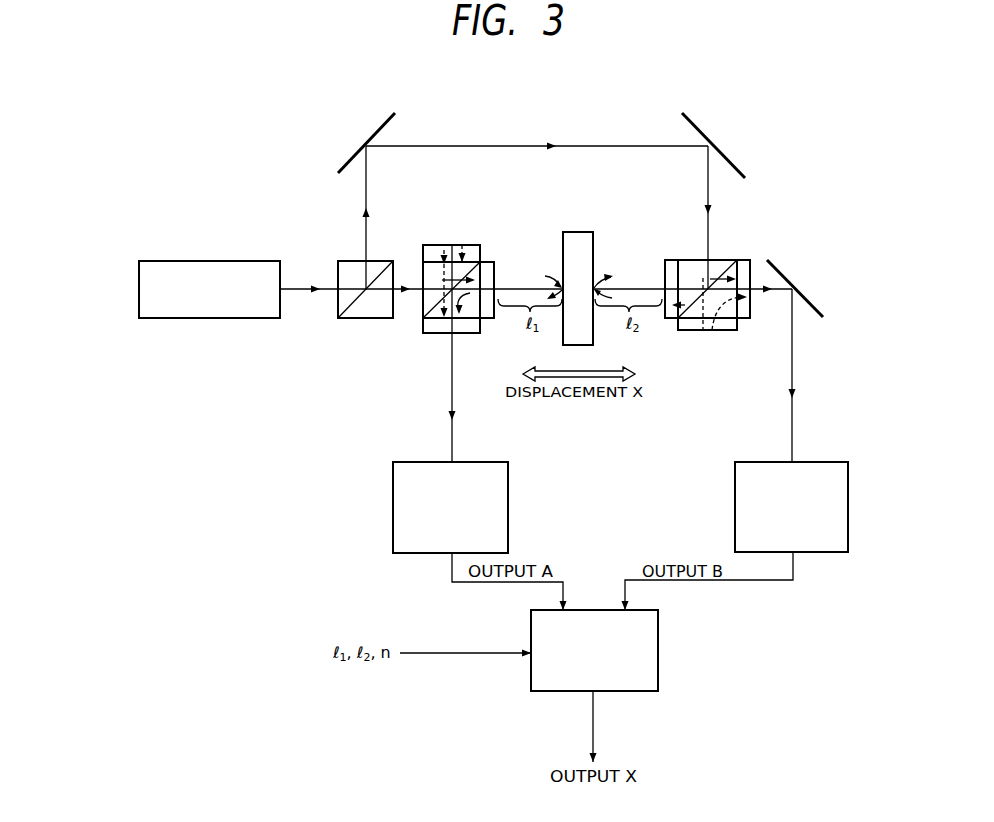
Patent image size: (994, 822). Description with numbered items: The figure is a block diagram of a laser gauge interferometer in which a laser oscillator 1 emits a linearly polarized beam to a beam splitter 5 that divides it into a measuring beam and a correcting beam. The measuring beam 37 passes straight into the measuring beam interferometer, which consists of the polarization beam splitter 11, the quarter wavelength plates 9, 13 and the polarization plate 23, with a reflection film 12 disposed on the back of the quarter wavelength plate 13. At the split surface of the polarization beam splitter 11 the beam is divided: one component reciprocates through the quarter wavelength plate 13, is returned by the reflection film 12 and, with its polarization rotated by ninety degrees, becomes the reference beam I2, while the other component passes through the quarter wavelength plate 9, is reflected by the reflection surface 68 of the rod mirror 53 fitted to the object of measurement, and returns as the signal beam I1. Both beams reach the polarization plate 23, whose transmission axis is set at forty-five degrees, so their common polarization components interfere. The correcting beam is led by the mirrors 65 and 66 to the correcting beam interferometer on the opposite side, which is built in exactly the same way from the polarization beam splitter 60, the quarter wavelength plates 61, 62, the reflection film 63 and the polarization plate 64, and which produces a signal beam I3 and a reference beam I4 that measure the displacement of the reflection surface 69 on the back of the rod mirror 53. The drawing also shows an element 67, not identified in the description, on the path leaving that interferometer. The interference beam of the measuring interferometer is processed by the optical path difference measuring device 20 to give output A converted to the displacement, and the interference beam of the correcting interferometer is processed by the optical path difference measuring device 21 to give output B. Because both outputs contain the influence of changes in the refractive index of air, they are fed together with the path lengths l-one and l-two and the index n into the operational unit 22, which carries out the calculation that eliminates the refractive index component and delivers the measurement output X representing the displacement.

The laser oscillator 1 is at (230, 261).
The beam splitter 5 is at (347, 261).
The quarter wavelength plate 9 is at (487, 262).
The polarization beam splitter 11 is at (468, 313).
The reflection film 12 is at (440, 245).
The quarter wavelength plate 13 is at (430, 252).
The polarization plate 23 is at (435, 330).
The optical path difference measuring device 20 is at (393, 481).
The optical path difference measuring device 21 is at (735, 481).
The operational unit 22 is at (659, 626).
The measuring beam 37 is at (488, 146).
The rod mirror 53 is at (573, 238).
The polarization beam splitter 60 is at (688, 265).
The quarter wavelength plate 61 is at (668, 272).
The quarter wavelength plate 62 is at (725, 331).
The reflection film 63 is at (696, 331).
The polarization plate 64 is at (741, 264).
The mirror 65 is at (357, 153).
The mirror 66 is at (697, 127).
The mirror 67 is at (812, 300).
The reflection surface 68 is at (561, 270).
The reflection surface 69 is at (597, 248).
The signal beam I1 is at (470, 293).
The reference beam I2 is at (446, 250).
The signal beam I3 is at (682, 306).
The reference beam I4 is at (747, 322).